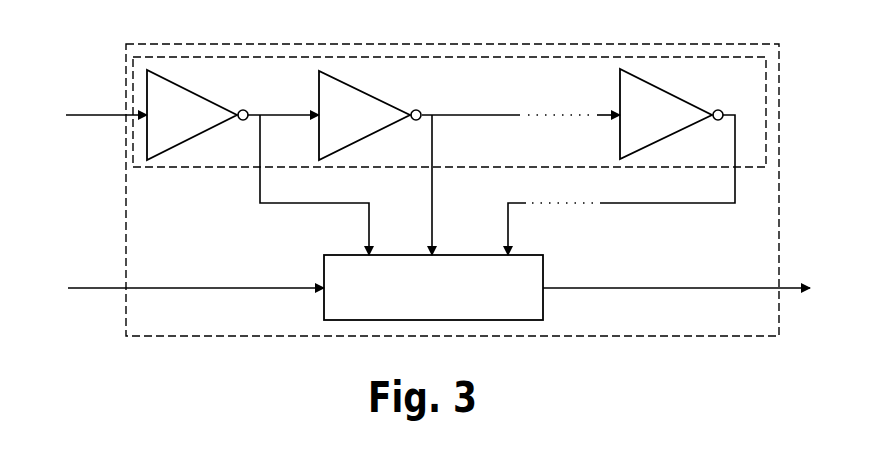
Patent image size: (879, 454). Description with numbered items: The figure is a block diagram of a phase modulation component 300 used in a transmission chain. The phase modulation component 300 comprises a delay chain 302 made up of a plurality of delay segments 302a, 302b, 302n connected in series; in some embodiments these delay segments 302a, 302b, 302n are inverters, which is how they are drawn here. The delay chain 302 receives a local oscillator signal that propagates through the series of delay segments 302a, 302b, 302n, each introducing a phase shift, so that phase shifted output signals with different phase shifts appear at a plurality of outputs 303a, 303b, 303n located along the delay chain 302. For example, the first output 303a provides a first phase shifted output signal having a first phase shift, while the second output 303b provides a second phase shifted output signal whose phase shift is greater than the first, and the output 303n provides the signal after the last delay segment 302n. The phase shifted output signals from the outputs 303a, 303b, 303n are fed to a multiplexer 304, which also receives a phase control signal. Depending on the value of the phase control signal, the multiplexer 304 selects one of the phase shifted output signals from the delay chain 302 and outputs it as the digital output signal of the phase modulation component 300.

The phase modulation component 300 is at (88, 19).
The delay chain 302 is at (747, 56).
The delay segment 302a is at (195, 93).
The delay segment 302b is at (368, 95).
The delay segment 302n is at (680, 93).
The first output 303a is at (259, 168).
The second output 303b is at (431, 168).
The output 303n is at (734, 168).
The multiplexer 304 is at (544, 272).